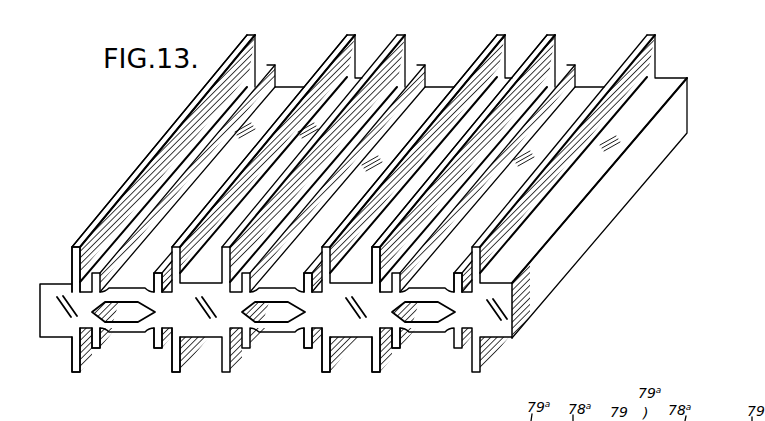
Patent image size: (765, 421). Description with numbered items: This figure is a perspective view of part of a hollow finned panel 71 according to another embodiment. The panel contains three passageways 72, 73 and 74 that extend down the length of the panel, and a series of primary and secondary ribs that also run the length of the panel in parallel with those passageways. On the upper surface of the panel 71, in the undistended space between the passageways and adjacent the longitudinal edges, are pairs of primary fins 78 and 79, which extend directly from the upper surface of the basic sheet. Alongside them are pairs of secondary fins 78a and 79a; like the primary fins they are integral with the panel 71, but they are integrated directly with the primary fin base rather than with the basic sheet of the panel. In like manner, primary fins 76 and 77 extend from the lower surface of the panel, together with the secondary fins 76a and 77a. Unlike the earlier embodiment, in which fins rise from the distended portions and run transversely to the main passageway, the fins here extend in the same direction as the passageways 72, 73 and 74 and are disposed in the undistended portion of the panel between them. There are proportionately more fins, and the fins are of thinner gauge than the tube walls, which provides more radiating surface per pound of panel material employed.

The hollow finned panel 71 is at (50, 330).
The passageway 72 is at (125, 323).
The passageway 73 is at (277, 323).
The passageway 74 is at (427, 323).
The primary fin 76 is at (97, 352).
The secondary fin 76a is at (70, 363).
The primary fin 77 is at (157, 352).
The secondary fin 77a is at (182, 358).
The primary fin 78 is at (172, 172).
The secondary fin 78a is at (72, 246).
The primary fin 79 is at (150, 274).
The secondary fin 79a is at (200, 211).